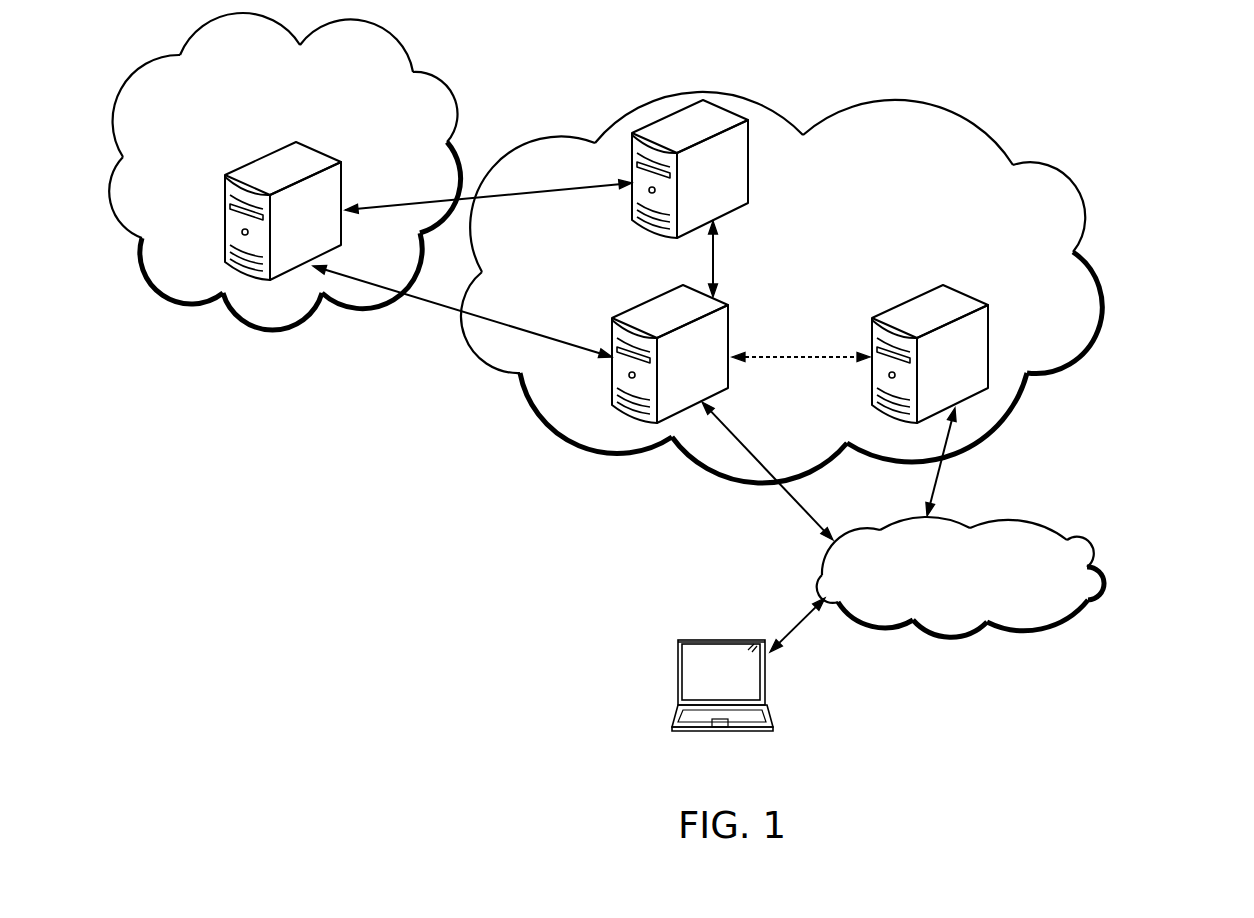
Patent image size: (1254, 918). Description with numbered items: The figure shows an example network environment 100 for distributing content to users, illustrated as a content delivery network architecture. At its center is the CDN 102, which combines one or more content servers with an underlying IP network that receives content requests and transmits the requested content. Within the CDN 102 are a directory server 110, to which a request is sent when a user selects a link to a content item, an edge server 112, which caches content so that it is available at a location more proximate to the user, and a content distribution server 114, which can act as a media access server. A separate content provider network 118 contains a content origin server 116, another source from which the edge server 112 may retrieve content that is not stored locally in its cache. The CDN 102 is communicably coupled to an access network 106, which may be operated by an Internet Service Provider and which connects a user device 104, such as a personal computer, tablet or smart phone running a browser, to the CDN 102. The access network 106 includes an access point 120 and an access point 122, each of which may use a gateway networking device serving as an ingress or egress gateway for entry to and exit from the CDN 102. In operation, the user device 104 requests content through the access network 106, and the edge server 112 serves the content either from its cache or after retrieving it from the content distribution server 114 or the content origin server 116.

The network environment 100 is at (1151, 145).
The CDN 102 is at (881, 244).
The user device 104 is at (678, 705).
The access network 106 is at (940, 598).
The directory server 110 is at (992, 330).
The edge server 112 is at (643, 302).
The content distribution server 114 is at (749, 187).
The content origin server 116 is at (225, 220).
The content provider network 118 is at (268, 118).
The access point 120 is at (807, 511).
The access point 122 is at (937, 483).